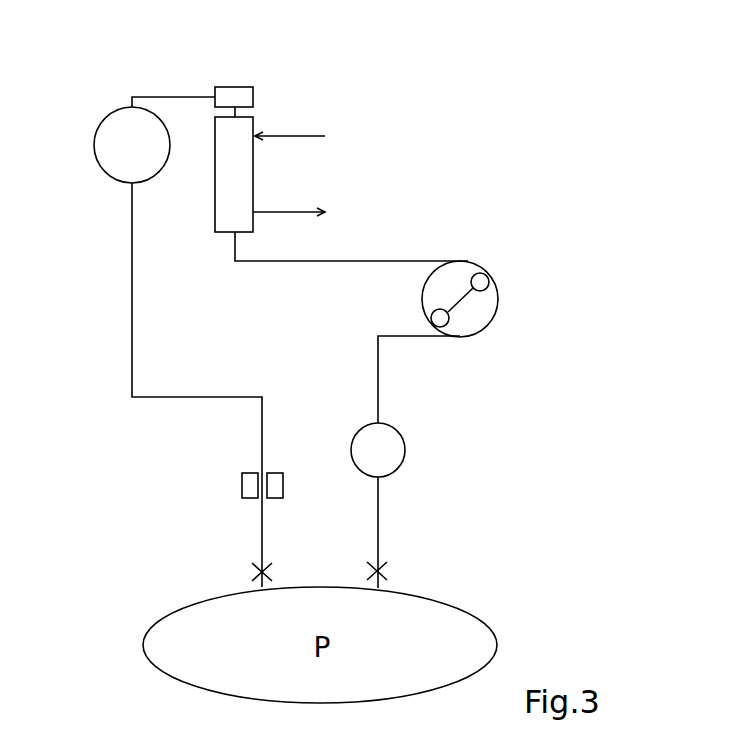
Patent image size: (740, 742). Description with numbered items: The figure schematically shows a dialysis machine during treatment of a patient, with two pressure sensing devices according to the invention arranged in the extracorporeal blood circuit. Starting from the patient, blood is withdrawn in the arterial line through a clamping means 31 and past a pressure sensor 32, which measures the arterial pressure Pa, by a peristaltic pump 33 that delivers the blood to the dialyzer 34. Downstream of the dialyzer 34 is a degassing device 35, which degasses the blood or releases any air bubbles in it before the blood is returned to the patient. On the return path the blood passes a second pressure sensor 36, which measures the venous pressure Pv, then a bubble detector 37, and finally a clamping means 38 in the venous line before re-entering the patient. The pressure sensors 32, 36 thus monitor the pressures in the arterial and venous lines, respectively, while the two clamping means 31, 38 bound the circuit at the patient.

The clamping means 31 is at (388, 569).
The pressure sensor 32 is at (403, 448).
The peristaltic pump 33 is at (493, 304).
The dialyzer 34 is at (245, 174).
The degassing device 35 is at (235, 93).
The pressure sensor 36 is at (101, 131).
The bubble detector 37 is at (238, 487).
The clamping means 38 is at (253, 568).